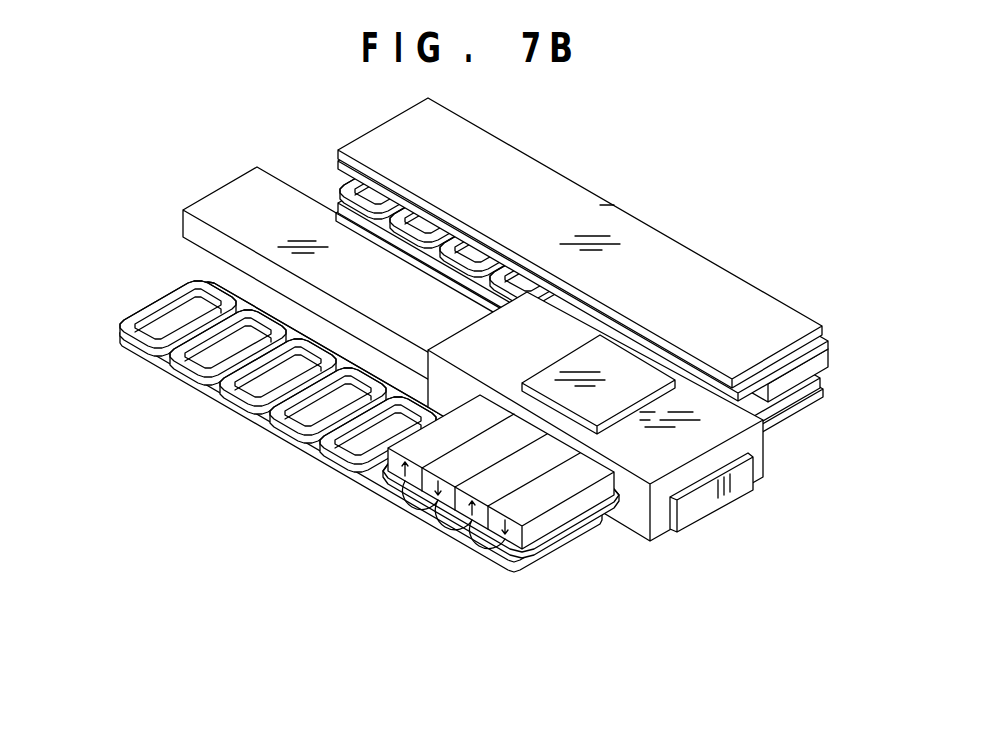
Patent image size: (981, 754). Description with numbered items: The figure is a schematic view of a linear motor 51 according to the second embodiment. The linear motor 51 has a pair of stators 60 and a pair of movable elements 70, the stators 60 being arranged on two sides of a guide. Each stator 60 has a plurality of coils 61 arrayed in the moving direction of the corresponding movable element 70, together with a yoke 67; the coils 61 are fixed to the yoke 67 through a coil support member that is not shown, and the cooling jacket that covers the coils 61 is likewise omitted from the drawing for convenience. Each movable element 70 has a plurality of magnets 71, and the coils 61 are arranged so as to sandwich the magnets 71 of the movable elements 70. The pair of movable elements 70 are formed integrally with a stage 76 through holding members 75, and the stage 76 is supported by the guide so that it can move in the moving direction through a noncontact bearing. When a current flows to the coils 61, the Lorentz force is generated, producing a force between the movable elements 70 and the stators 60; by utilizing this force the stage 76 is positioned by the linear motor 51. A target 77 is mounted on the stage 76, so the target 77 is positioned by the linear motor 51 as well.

The linear motor 51 is at (446, 400).
The stator 60 is at (351, 426).
The coil 61 is at (278, 376).
The yoke 67 is at (300, 447).
The movable element 70 is at (559, 414).
The magnet 71 is at (478, 484).
The holding member 75 is at (587, 477).
The stage 76 is at (738, 423).
The target 77 is at (605, 385).